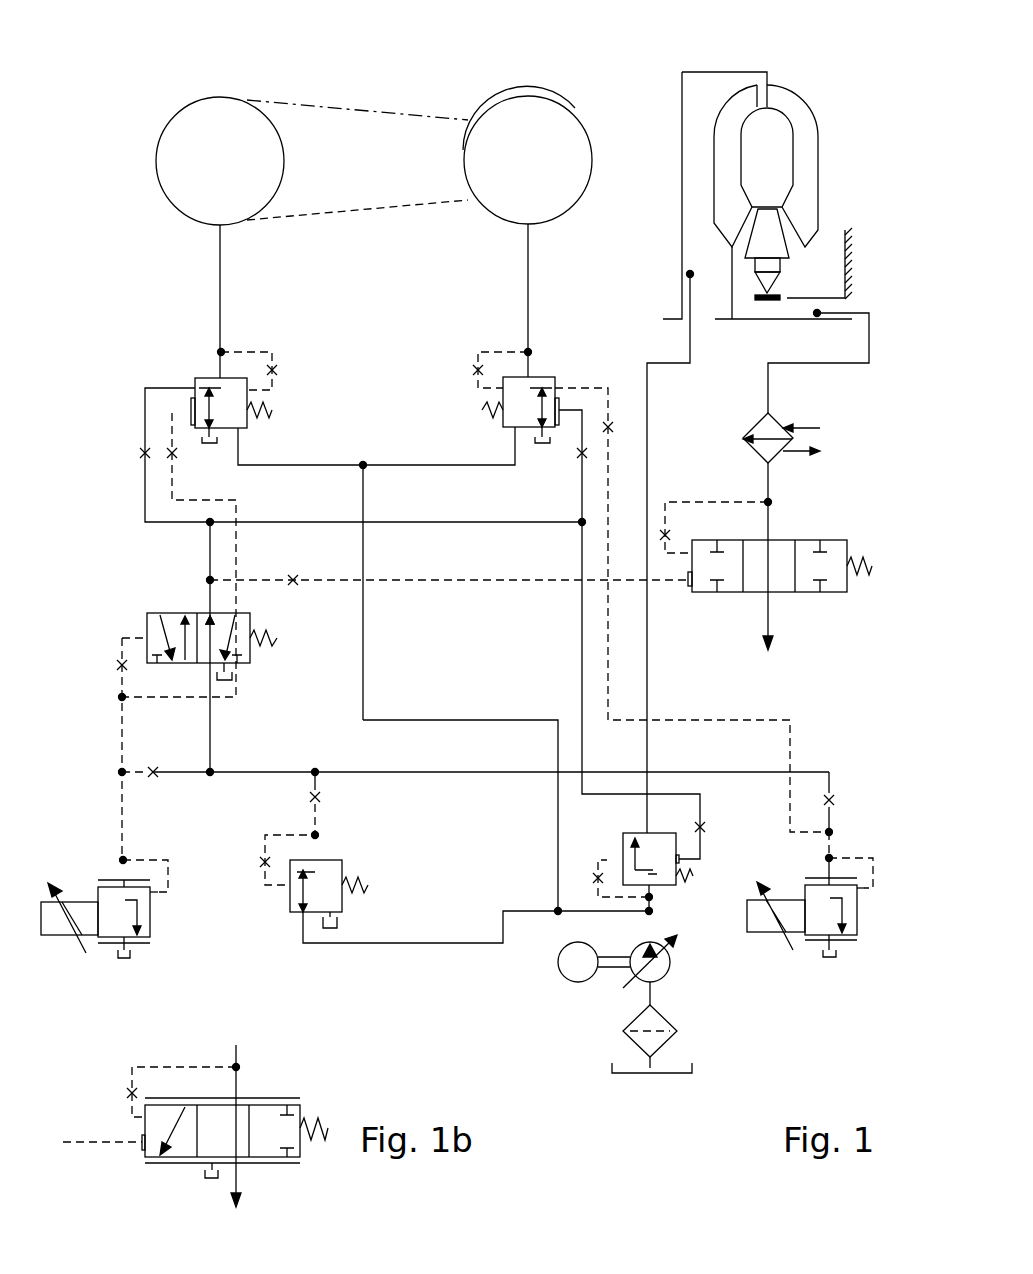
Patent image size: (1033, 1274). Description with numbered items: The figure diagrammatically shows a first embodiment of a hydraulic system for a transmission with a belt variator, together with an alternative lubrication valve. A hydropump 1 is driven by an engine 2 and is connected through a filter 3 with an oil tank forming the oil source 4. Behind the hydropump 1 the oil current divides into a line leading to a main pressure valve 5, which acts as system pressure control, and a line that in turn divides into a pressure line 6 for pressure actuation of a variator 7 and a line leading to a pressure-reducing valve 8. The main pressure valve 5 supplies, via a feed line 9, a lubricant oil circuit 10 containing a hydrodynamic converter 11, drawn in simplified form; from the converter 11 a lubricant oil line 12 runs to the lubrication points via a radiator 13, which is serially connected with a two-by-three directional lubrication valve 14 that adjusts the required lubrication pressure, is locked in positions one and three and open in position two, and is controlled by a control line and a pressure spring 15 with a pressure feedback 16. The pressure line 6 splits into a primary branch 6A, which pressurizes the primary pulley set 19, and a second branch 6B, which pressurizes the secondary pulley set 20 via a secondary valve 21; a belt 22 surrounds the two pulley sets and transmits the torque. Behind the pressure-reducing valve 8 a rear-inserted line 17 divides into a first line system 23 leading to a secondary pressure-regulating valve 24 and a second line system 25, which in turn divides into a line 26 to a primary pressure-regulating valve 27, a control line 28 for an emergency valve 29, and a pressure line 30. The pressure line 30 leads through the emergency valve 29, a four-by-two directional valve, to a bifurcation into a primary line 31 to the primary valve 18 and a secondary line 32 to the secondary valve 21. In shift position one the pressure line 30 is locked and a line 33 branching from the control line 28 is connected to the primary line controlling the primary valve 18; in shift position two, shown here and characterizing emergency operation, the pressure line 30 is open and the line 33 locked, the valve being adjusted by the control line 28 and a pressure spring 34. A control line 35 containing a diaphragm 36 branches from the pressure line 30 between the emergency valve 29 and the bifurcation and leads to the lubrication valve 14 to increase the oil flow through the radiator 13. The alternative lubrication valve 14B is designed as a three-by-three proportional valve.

In FIG. 1, the hydropump 1 is at (668, 953).
In FIG. 1, the engine 2 is at (560, 975).
In FIG. 1, the filter 3 is at (672, 1017).
In FIG. 1, the oil source 4 is at (692, 1073).
In FIG. 1, the main pressure valve 5 is at (622, 838).
In FIG. 1, the pressure line 6 is at (368, 705).
In FIG. 1, the primary pressure line branch 6A is at (218, 265).
In FIG. 1, the second branch 6B is at (535, 272).
In FIG. 1, the variator 7 is at (578, 104).
In FIG. 1, the pressure-reducing valve 8 is at (342, 865).
In FIG. 1, the feed line 9 is at (648, 712).
In FIG. 1, the lubricant oil circuit 10 is at (658, 352).
In FIG. 1, the hydrodynamic converter 11 is at (795, 100).
In FIG. 1, the lubricant oil line 12 is at (766, 363).
In FIG. 1, the radiator 13 is at (743, 438).
In FIG. 1, the 2/3 directional lubrication valve 14 is at (707, 595).
In FIG. 1B, the lubrication valve 14B is at (172, 1158).
In FIG. 1, the pressure spring 15 is at (866, 560).
In FIG. 1B, the pressure spring 15 is at (323, 1128).
In FIG. 1, the pressure feedback 16 is at (703, 500).
In FIG. 1B, the pressure feedback 16 is at (158, 1066).
In FIG. 1, the rear-inserted line 17 is at (318, 823).
In FIG. 1, the primary valve 18 is at (197, 377).
In FIG. 1, the primary pulley set 19 is at (185, 138).
In FIG. 1, the secondary pulley set 20 is at (497, 125).
In FIG. 1, the secondary valve 21 is at (535, 377).
In FIG. 1, the belt 22 is at (383, 107).
In FIG. 1, the first line system 23 is at (357, 770).
In FIG. 1, the secondary pressure-regulating valve 24 is at (857, 935).
In FIG. 1, the second line system 25 is at (282, 770).
In FIG. 1, the line 26 is at (123, 840).
In FIG. 1, the primary pressure-regulating valve 27 is at (150, 925).
In FIG. 1, the control line 28 is at (118, 638).
In FIG. 1, the emergency valve 29 is at (152, 613).
In FIG. 1, the pressure line 30 is at (213, 722).
In FIG. 1, the primary line 31 is at (143, 503).
In FIG. 1, the secondary line 32 is at (574, 412).
In FIG. 1, the line 33 is at (238, 573).
In FIG. 1, the pressure spring 34 is at (276, 637).
In FIG. 1, the control line 35 is at (423, 580).
In FIG. 1B, the control line 35 is at (107, 1145).
In FIG. 1, the diaphragm 36 is at (343, 600).